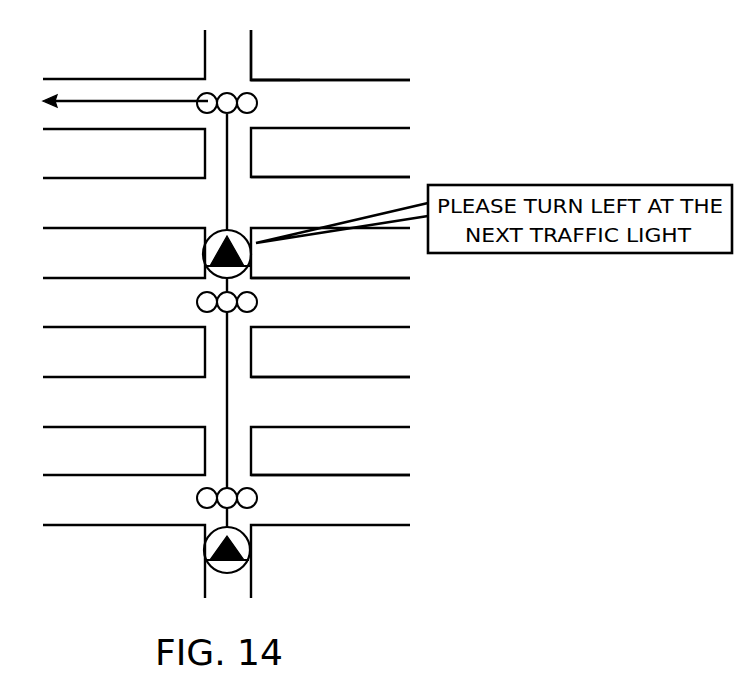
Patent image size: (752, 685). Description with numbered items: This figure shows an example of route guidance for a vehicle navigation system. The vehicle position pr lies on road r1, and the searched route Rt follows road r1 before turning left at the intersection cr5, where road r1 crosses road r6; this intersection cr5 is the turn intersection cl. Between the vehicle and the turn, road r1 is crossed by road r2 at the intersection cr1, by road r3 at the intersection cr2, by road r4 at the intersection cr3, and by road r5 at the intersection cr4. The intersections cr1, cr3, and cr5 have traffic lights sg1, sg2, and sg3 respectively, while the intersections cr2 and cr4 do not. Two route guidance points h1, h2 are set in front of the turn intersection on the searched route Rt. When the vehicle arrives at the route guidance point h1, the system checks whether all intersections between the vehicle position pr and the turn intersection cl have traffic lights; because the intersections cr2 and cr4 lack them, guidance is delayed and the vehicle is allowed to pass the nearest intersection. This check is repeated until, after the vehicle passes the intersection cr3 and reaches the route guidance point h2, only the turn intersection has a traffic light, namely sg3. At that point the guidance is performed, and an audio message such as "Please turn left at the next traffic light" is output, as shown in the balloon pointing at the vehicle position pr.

The searched route Rt is at (113, 102).
The turn intersection cl is at (306, 46).
The intersection cr5 is at (330, 55).
The road r6 is at (370, 92).
The traffic light sg3 is at (200, 114).
The intersection cr4 is at (258, 168).
The road r5 is at (396, 198).
The vehicle position pr is at (222, 232).
The route guidance point h2 is at (203, 258).
The intersection cr3 is at (258, 270).
The road r4 is at (396, 299).
The traffic light sg2 is at (200, 312).
The intersection cr2 is at (258, 366).
The road r3 is at (396, 396).
The traffic light sg1 is at (203, 490).
The intersection cr1 is at (258, 462).
The road r2 is at (396, 492).
The road r1 is at (204, 585).
The route guidance point h1 is at (252, 548).